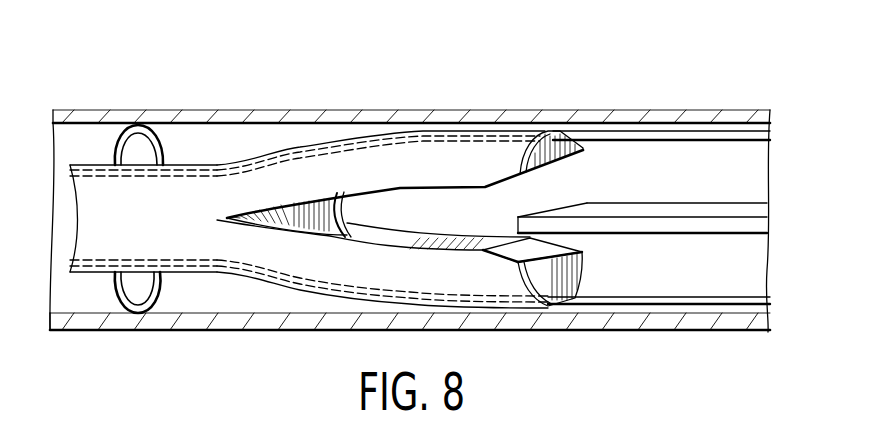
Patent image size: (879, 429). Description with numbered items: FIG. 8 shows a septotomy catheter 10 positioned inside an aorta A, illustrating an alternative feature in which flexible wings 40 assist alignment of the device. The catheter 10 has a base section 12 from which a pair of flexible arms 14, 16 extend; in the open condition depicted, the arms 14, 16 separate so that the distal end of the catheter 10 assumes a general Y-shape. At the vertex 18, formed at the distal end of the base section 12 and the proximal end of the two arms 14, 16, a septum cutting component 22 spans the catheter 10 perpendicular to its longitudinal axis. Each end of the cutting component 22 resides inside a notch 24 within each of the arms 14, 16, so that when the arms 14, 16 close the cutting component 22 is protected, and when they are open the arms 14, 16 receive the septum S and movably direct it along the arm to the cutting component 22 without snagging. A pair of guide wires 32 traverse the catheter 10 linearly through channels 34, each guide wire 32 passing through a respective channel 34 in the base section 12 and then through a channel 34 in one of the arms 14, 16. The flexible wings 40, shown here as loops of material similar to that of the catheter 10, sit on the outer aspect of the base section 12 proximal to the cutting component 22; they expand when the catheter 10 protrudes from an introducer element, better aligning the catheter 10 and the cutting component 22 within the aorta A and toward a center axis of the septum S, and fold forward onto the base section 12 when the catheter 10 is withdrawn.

The septotomy catheter 10 is at (77, 91).
The base section 12 is at (114, 223).
The flexible arm 14 is at (463, 173).
The flexible arm 16 is at (461, 282).
The vertex 18 is at (227, 218).
The septum cutting component 22 is at (327, 196).
The notch 24 is at (363, 232).
The guide wire 32 is at (640, 141).
The channel 34 is at (500, 137).
The flexible wing 40 is at (155, 128).
The aorta A is at (724, 108).
The septum S is at (739, 177).